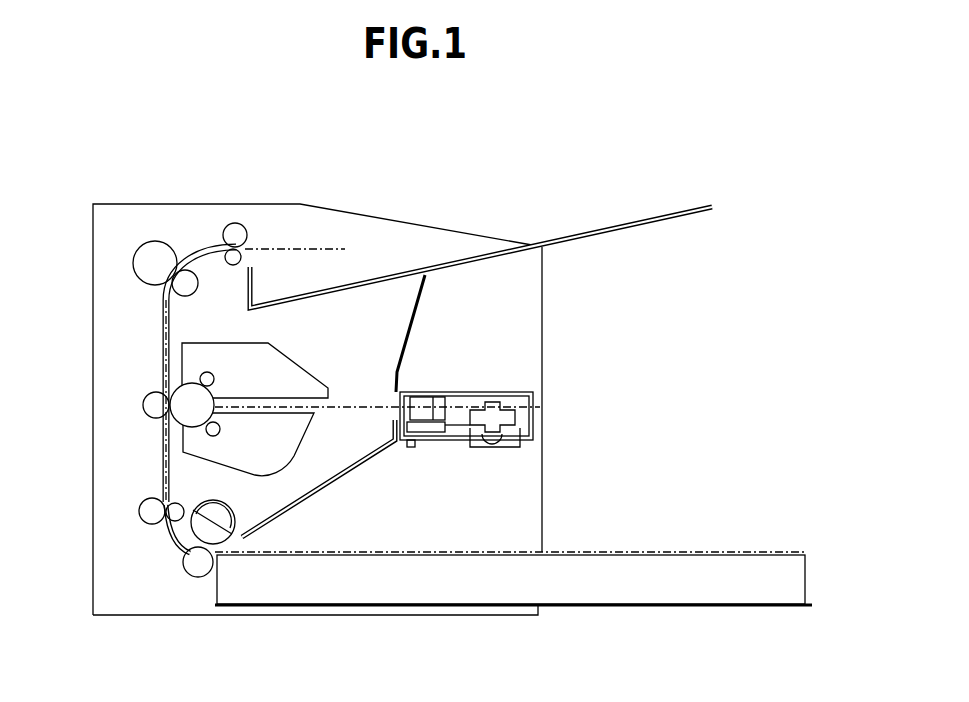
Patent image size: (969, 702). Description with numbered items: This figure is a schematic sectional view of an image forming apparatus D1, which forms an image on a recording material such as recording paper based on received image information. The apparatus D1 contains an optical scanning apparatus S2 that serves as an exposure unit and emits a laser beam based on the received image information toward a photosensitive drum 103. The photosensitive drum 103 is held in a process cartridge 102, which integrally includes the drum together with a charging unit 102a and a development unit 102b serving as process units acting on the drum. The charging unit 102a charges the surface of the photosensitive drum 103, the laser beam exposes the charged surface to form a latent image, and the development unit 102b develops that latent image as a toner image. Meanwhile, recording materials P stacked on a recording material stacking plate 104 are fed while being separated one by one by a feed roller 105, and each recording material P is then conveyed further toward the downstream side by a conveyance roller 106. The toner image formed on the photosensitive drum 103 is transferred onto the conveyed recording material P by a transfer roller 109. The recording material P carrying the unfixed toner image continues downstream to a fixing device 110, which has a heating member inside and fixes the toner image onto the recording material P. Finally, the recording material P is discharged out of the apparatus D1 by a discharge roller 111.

The image forming apparatus D1 is at (117, 217).
The fixing device 110 is at (160, 250).
The discharge roller 111 is at (233, 232).
The photosensitive drum 103 is at (185, 388).
The transfer roller 109 is at (152, 405).
The process cartridge 102 is at (290, 355).
The charging unit 102a is at (211, 374).
The development unit 102b is at (220, 428).
The conveyance roller 106 is at (150, 510).
The feed roller 105 is at (232, 512).
The optical scanning apparatus S2 is at (513, 398).
The recording material stacking plate 104 is at (600, 606).
The recording material P is at (645, 552).